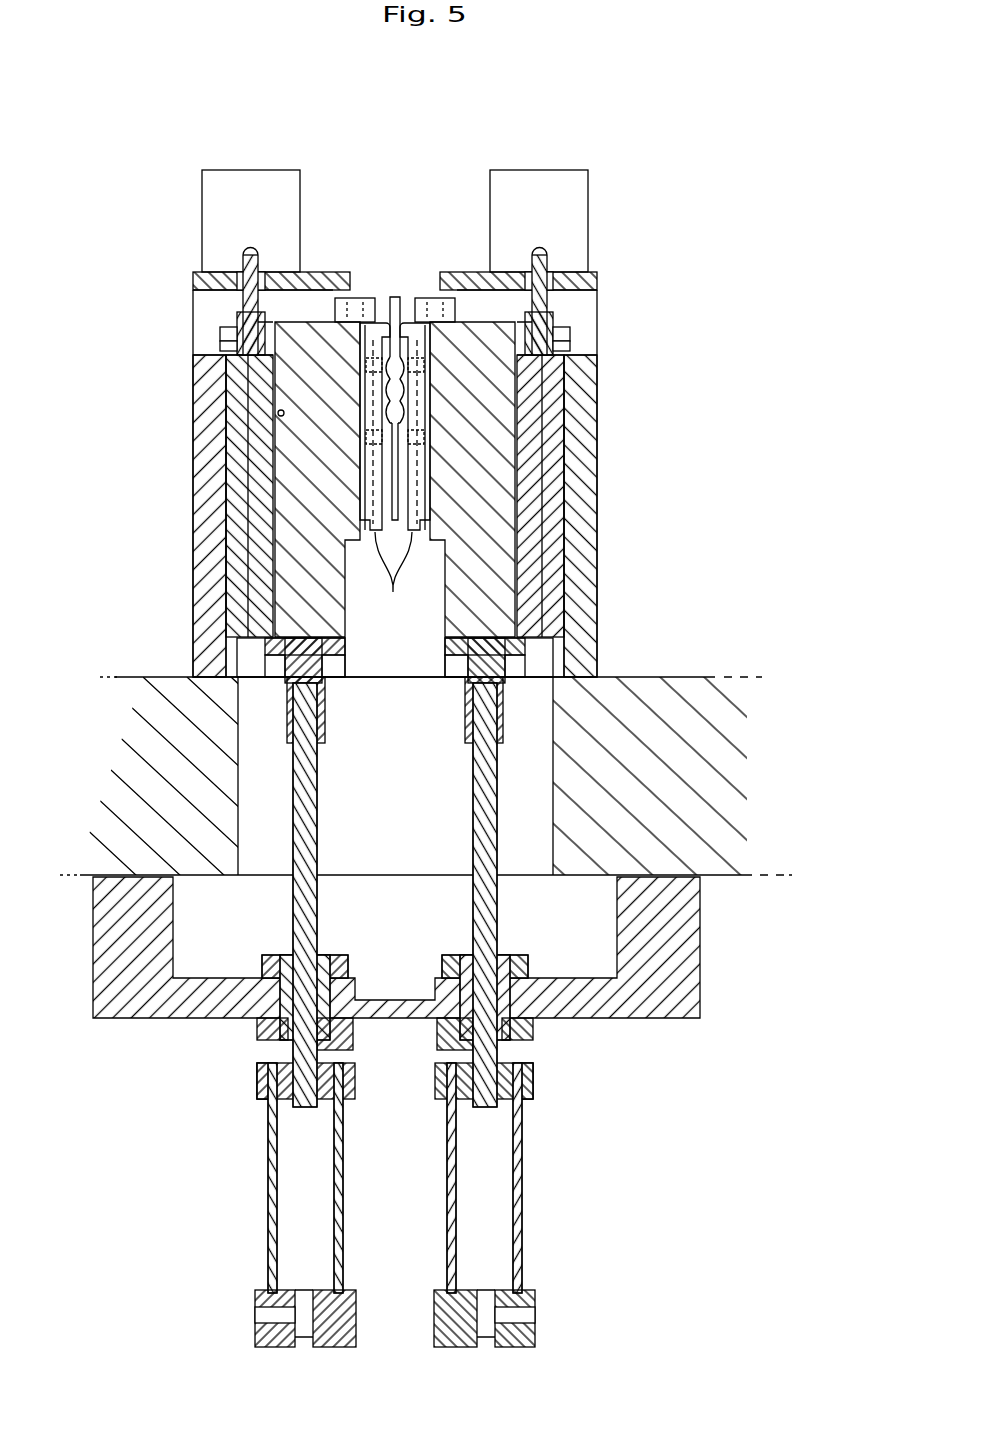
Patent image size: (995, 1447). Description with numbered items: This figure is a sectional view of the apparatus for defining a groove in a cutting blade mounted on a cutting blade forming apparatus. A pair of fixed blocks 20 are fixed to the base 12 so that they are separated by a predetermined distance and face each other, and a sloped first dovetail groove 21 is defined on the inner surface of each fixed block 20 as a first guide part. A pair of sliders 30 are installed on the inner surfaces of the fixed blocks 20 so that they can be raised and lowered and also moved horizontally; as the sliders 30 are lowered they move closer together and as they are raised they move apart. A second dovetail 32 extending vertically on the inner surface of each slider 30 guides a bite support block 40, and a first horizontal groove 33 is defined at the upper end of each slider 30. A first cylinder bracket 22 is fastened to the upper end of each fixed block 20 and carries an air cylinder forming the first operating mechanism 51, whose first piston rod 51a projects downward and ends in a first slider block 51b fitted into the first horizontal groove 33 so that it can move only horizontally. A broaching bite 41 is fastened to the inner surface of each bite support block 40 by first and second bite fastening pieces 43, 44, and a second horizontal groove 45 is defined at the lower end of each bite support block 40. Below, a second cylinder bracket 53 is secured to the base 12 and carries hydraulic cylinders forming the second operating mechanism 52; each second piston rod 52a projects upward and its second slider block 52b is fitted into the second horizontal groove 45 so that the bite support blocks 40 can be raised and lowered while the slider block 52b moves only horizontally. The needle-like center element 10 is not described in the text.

The needle 10 is at (398, 500).
The base 12 is at (688, 677).
The fixed block 20 is at (195, 583).
The first dovetail groove 21 is at (232, 542).
The first cylinder bracket 22 is at (318, 272).
The slider 30 is at (250, 462).
The second dovetail 32 is at (278, 413).
The first horizontal groove 33 is at (222, 335).
The bite support block 40 is at (292, 503).
The broaching bite 41 is at (410, 338).
The first bite fastening piece 43 is at (393, 576).
The second bite fastening piece 44 is at (360, 298).
The second horizontal groove 45 is at (268, 646).
The first operating mechanism 51 is at (246, 182).
The first piston rod 51a is at (242, 308).
The first slider block 51b is at (245, 351).
The second operating mechanism 52 is at (266, 1175).
The second piston rod 52a is at (318, 836).
The second slider block 52b is at (322, 708).
The second cylinder bracket 53 is at (155, 1020).